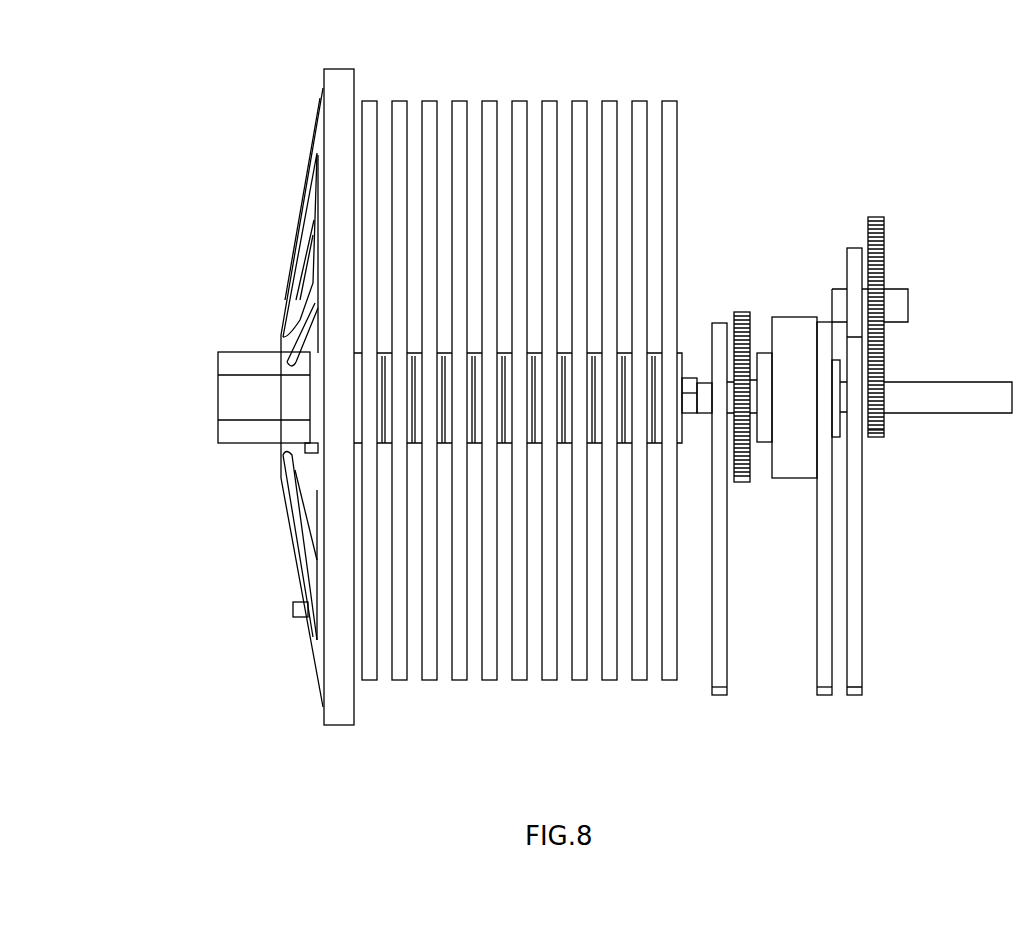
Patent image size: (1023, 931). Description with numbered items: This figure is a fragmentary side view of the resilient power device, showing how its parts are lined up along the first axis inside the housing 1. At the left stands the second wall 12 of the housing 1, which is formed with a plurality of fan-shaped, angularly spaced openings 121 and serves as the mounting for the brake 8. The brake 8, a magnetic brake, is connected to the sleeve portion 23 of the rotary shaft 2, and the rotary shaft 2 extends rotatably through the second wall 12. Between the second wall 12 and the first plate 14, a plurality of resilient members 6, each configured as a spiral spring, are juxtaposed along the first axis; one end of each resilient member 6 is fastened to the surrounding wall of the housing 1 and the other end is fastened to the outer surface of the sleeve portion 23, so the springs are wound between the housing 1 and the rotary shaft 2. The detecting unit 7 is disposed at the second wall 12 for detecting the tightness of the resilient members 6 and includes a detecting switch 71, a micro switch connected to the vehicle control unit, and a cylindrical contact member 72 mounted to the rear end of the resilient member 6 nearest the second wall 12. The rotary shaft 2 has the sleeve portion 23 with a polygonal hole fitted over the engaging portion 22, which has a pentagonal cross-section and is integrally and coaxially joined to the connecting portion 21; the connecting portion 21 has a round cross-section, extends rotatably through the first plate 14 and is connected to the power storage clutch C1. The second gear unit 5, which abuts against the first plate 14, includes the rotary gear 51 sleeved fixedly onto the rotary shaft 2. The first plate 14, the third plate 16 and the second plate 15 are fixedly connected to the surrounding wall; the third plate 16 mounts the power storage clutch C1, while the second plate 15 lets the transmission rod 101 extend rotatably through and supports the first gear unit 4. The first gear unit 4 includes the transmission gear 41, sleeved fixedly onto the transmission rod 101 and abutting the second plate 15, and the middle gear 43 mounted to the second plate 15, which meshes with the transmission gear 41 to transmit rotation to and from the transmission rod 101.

The housing 1 is at (305, 90).
The second wall 12 is at (346, 712).
The resilient member 6 is at (516, 112).
The sleeve portion 23 is at (656, 443).
The brake 8 is at (229, 368).
The detecting unit 7 is at (210, 508).
The openings 121 is at (297, 337).
The detecting switch 71 is at (313, 448).
The contact member 72 is at (297, 609).
The rotary shaft 2 is at (692, 340).
The engaging portion 22 is at (690, 413).
The connecting portion 21 is at (705, 380).
The first plate 14 is at (722, 690).
The third plate 16 is at (827, 690).
The second plate 15 is at (855, 690).
The second gear unit 5 is at (742, 308).
The rotary gear 51 is at (744, 484).
The power storage clutch C1 is at (795, 468).
The first gear unit 4 is at (876, 212).
The middle gear 43 is at (876, 236).
The transmission gear 41 is at (877, 434).
The transmission rod 101 is at (987, 397).